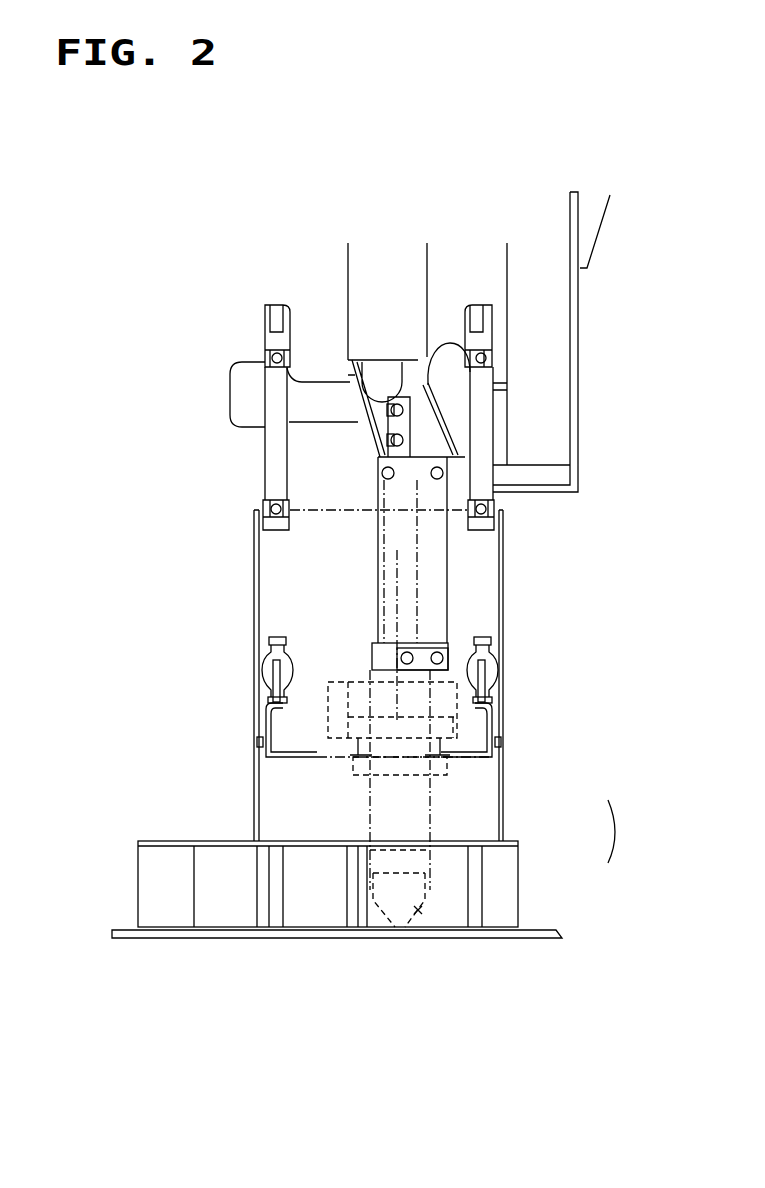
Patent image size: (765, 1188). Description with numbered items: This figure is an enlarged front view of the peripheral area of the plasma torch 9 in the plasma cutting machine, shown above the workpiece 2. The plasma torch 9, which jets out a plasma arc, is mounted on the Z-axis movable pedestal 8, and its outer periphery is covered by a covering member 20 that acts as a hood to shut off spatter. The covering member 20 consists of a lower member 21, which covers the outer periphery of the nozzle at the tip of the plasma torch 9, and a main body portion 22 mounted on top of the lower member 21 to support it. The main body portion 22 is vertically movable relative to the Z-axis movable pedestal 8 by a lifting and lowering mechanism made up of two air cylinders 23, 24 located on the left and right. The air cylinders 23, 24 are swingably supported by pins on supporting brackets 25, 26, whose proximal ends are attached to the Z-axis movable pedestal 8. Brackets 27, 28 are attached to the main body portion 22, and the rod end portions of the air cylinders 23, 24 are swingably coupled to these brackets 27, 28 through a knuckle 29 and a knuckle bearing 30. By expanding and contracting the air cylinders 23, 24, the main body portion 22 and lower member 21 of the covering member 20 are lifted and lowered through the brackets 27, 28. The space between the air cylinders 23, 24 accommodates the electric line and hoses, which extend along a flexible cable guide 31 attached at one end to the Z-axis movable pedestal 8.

The workpiece 2 is at (535, 930).
The Z-axis movable pedestal 8 is at (428, 428).
The plasma torch 9 is at (422, 935).
The covering member 20 is at (635, 831).
The lower member 21 is at (517, 878).
The main body portion 22 is at (500, 822).
The air cylinder 23 is at (282, 455).
The air cylinder 24 is at (480, 483).
The supporting bracket 25 is at (263, 322).
The supporting bracket 26 is at (490, 322).
The bracket 27 is at (262, 742).
The bracket 28 is at (498, 745).
The knuckle 29 is at (268, 655).
The knuckle bearing 30 is at (267, 690).
The flexible cable guide 31 is at (372, 292).